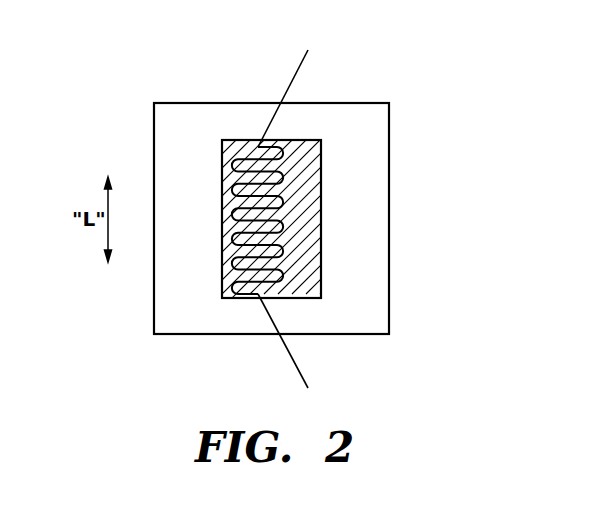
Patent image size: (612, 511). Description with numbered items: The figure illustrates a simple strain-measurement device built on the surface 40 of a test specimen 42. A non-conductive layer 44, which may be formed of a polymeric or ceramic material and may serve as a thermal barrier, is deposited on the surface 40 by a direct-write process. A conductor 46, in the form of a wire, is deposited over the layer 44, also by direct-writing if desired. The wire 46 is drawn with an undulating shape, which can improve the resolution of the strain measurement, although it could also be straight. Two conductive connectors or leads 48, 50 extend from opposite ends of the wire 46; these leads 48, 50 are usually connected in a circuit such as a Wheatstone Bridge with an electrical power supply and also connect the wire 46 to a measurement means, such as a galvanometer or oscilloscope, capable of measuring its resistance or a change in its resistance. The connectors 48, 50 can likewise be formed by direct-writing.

The surface 40 is at (314, 219).
The test specimen 42 is at (389, 278).
The non-conductive layer 44 is at (322, 243).
The conductor 46 is at (284, 200).
The connector 48 is at (302, 62).
The connector 50 is at (302, 373).